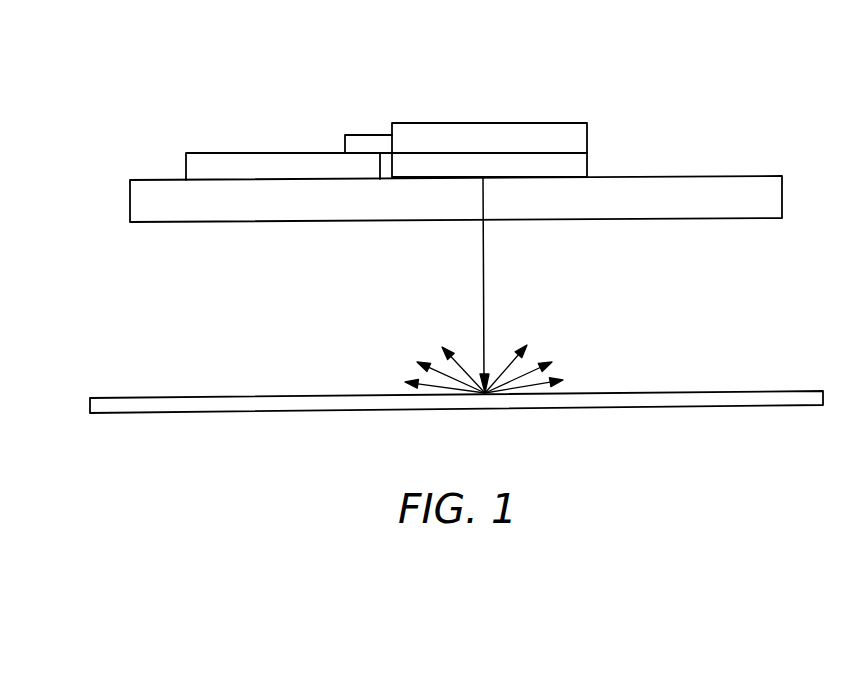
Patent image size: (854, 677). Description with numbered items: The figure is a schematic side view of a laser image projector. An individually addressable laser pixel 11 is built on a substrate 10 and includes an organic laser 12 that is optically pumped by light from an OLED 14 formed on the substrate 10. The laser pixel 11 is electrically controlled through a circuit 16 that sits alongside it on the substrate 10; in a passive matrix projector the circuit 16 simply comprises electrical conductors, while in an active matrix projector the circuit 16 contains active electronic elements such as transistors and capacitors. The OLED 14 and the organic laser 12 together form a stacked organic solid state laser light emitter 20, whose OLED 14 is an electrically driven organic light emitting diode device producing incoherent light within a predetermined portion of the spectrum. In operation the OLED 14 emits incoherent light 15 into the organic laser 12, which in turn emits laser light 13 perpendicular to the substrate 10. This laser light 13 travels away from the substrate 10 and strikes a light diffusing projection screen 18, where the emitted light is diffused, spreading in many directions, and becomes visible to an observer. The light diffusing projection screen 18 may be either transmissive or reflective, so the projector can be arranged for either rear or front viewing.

The substrate 10 is at (130, 208).
The individually addressable laser pixel 11 is at (336, 110).
The organic laser 12 is at (587, 157).
The laser light 13 is at (483, 200).
The OLED 14 is at (587, 132).
The incoherent light 15 is at (452, 158).
The circuit 16 is at (242, 154).
The light diffusing projection screen 18 is at (280, 397).
The organic solid state laser light emitter 20 is at (564, 127).